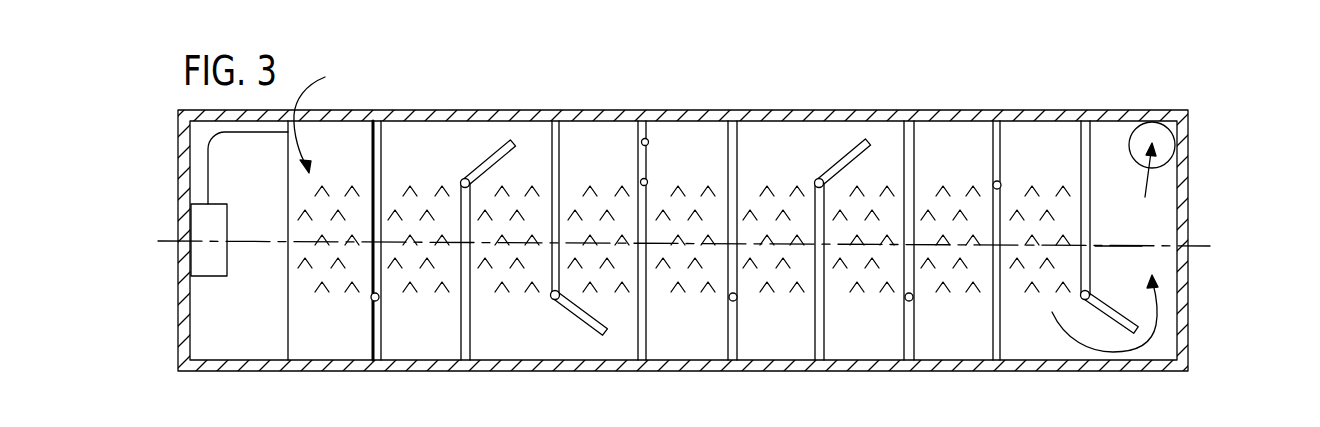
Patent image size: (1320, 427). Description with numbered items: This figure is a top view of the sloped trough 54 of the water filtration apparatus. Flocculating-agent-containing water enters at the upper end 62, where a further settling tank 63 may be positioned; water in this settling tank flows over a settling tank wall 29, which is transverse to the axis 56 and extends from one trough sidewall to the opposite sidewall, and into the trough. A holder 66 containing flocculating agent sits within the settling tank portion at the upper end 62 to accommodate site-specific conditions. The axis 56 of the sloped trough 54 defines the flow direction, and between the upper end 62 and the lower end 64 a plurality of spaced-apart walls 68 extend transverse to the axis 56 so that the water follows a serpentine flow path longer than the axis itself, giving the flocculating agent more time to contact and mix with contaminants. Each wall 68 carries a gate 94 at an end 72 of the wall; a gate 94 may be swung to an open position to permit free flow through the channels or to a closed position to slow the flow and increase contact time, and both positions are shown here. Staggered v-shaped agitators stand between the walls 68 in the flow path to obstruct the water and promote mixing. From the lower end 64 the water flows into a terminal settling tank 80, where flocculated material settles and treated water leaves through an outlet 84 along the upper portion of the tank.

The settling tank wall 29 is at (330, 112).
The sloped trough 54 is at (1083, 110).
The axis 56 is at (1173, 247).
The upper end 62 is at (212, 334).
The further settling tank 63 is at (203, 138).
The lower end 64 is at (1158, 232).
The holder 66 is at (203, 234).
The spaced-apart walls 68 is at (373, 125).
The end of wall 72 is at (466, 180).
The terminal settling tank 80 is at (1162, 334).
The outlet 84 is at (1160, 137).
The gate 94 is at (513, 142).